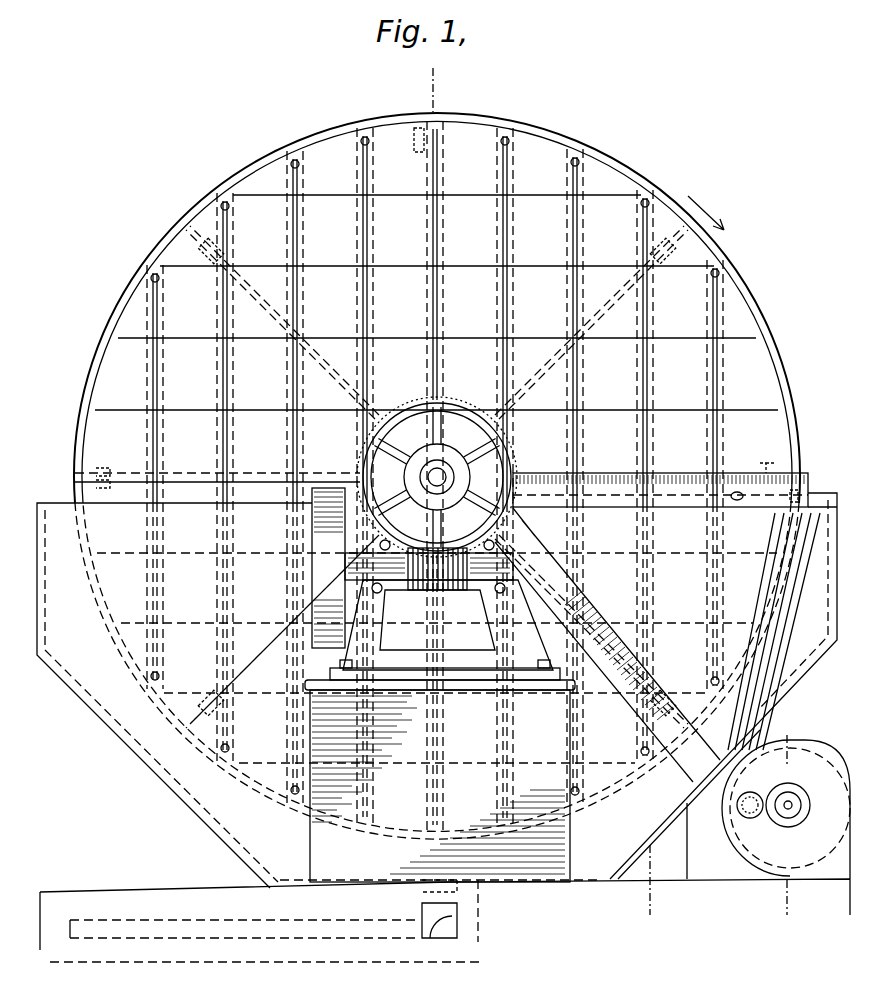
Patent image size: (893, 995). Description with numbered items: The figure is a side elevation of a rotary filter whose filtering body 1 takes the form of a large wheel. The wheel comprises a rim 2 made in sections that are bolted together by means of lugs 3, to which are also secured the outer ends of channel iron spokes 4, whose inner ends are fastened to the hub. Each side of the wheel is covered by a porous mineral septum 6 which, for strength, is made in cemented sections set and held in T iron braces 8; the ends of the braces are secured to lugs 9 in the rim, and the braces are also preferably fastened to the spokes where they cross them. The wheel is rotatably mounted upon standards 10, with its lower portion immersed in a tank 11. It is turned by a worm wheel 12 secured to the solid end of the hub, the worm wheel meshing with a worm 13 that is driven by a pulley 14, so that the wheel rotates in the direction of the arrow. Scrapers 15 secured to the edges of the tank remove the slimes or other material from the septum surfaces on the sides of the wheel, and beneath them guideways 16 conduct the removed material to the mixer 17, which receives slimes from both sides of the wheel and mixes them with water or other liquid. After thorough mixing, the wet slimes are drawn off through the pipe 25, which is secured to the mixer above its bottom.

The filtering body 1 is at (603, 180).
The rim 2 is at (779, 323).
The lugs 3 is at (413, 140).
The channel iron spokes 4 is at (438, 182).
The porous mineral septum 6 is at (426, 479).
The T iron braces 8 is at (358, 174).
The lugs 9 is at (362, 143).
The standards 10 is at (440, 781).
The tank 11 is at (120, 722).
The worm wheel 12 is at (432, 412).
The worm 13 is at (456, 582).
The pulley 14 is at (320, 572).
The scrapers 15 is at (811, 470).
The guideways 16 is at (588, 604).
The mixer 17 is at (805, 750).
The pipe 25 is at (750, 819).